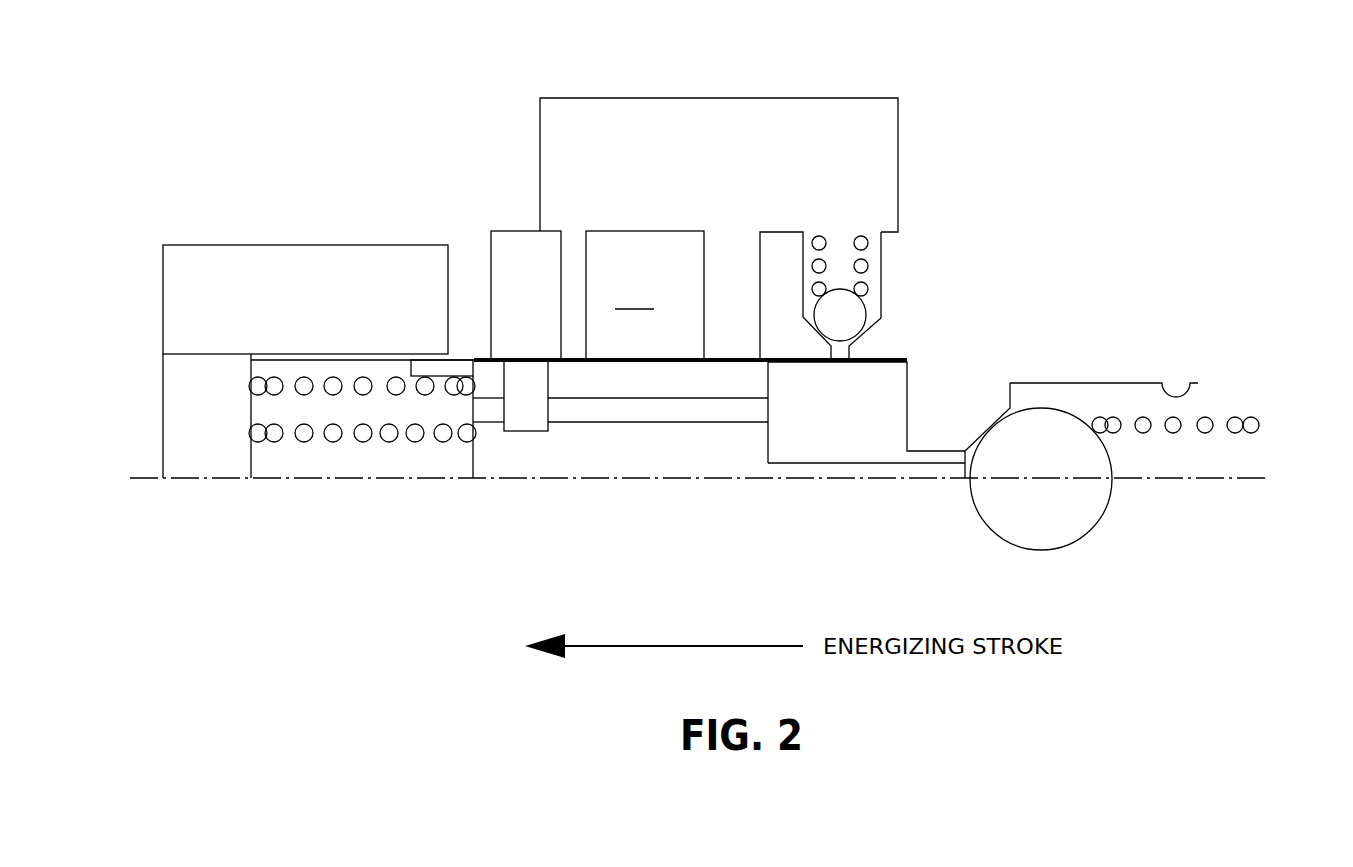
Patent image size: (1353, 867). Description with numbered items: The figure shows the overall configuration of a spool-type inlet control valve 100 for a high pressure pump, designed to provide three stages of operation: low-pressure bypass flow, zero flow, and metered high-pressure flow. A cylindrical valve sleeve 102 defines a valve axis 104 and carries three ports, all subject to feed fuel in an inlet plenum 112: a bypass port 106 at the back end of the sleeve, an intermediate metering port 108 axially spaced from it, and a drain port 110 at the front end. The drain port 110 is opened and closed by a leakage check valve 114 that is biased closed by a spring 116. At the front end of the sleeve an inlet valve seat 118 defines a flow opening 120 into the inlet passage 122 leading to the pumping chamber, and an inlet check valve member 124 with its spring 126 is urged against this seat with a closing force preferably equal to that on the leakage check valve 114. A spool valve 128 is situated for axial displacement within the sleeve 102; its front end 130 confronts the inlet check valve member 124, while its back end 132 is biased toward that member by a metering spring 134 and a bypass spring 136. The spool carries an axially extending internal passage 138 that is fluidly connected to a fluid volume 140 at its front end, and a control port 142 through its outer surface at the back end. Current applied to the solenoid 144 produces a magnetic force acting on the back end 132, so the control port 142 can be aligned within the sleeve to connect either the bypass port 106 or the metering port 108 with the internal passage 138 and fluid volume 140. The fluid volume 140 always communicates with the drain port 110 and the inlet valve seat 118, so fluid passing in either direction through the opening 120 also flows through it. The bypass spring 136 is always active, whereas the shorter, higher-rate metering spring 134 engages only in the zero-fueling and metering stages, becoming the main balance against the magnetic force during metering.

The inlet control valve 100 is at (1046, 180).
The valve sleeve 102 is at (645, 295).
The valve axis 104 is at (855, 478).
The bypass port 106 is at (557, 358).
The metering port 108 is at (703, 362).
The drain port 110 is at (852, 350).
The inlet plenum 112 is at (757, 120).
The leakage check valve 114 is at (865, 308).
The spring 116 is at (867, 264).
The inlet valve seat 118 is at (990, 428).
The flow opening 120 is at (978, 437).
The inlet passage 122 is at (1198, 385).
The inlet check valve member 124 is at (1093, 520).
The spring 126 is at (1257, 420).
The spool valve 128 is at (716, 484).
The front end 130 is at (945, 468).
The back end 132 is at (455, 372).
The metering spring 134 is at (250, 387).
The bypass spring 136 is at (360, 436).
The internal passage 138 is at (599, 410).
The fluid volume 140 is at (890, 393).
The control port 142 is at (525, 422).
The solenoid 144 is at (321, 245).